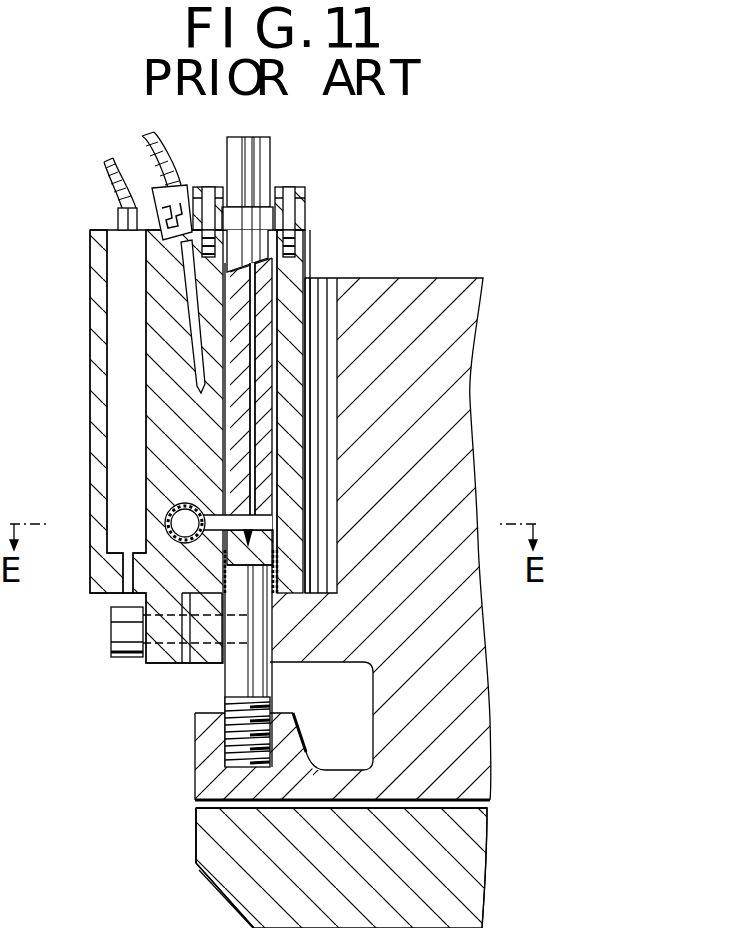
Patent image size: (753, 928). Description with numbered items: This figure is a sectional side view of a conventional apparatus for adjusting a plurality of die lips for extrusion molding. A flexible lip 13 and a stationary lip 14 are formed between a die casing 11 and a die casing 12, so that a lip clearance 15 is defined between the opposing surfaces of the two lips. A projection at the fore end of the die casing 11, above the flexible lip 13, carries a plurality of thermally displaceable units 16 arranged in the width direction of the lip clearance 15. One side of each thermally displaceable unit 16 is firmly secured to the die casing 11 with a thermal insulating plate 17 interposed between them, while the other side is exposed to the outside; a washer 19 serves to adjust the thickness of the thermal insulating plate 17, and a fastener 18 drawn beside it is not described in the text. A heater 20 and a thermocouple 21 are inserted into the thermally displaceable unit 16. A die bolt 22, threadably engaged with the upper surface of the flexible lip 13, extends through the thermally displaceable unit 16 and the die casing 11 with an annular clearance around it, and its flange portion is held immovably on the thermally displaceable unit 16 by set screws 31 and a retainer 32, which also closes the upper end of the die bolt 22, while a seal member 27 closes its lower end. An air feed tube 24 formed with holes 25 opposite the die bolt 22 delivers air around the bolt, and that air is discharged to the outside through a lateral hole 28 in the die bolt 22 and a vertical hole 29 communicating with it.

The die casing 11 is at (468, 690).
The die casing 12 is at (470, 864).
The flexible lip 13 is at (197, 746).
The stationary lip 14 is at (196, 841).
The lip clearance 15 is at (197, 803).
The thermally displaceable unit 16 is at (90, 300).
The thermal insulating plate 17 is at (353, 340).
The bolt 18 is at (112, 632).
The washer 19 is at (185, 663).
The heater 20 is at (118, 218).
The thermocouple 21 is at (147, 182).
The die bolt 22 is at (272, 162).
The air feed tube 24 is at (166, 530).
The holes 25 is at (172, 510).
The seal member 27 is at (273, 566).
The lateral hole 28 is at (258, 522).
The vertical hole 29 is at (250, 443).
The set screws 31 is at (290, 194).
The retainer 32 is at (223, 193).